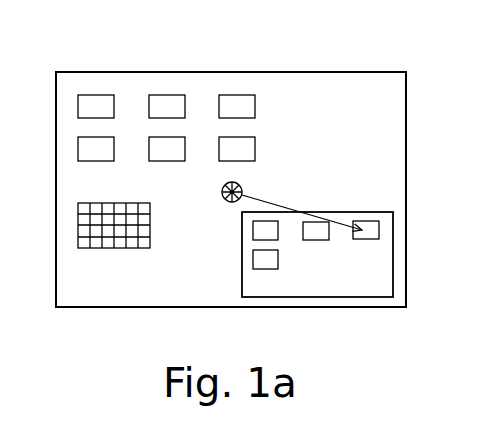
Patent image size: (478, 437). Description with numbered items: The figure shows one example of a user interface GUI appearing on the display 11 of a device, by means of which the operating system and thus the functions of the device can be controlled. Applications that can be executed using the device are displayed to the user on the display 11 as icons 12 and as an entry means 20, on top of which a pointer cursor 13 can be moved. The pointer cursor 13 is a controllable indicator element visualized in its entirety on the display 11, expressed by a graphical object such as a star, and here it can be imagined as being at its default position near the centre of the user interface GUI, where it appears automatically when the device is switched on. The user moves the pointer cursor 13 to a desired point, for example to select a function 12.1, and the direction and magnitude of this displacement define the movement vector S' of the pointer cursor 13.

The user interface GUI is at (333, 66).
The display 11 is at (97, 72).
The icon 12 is at (234, 100).
The function 12.1 is at (368, 233).
The pointer cursor 13 is at (222, 191).
The entry means 20 is at (86, 259).
The movement vector S' is at (317, 212).